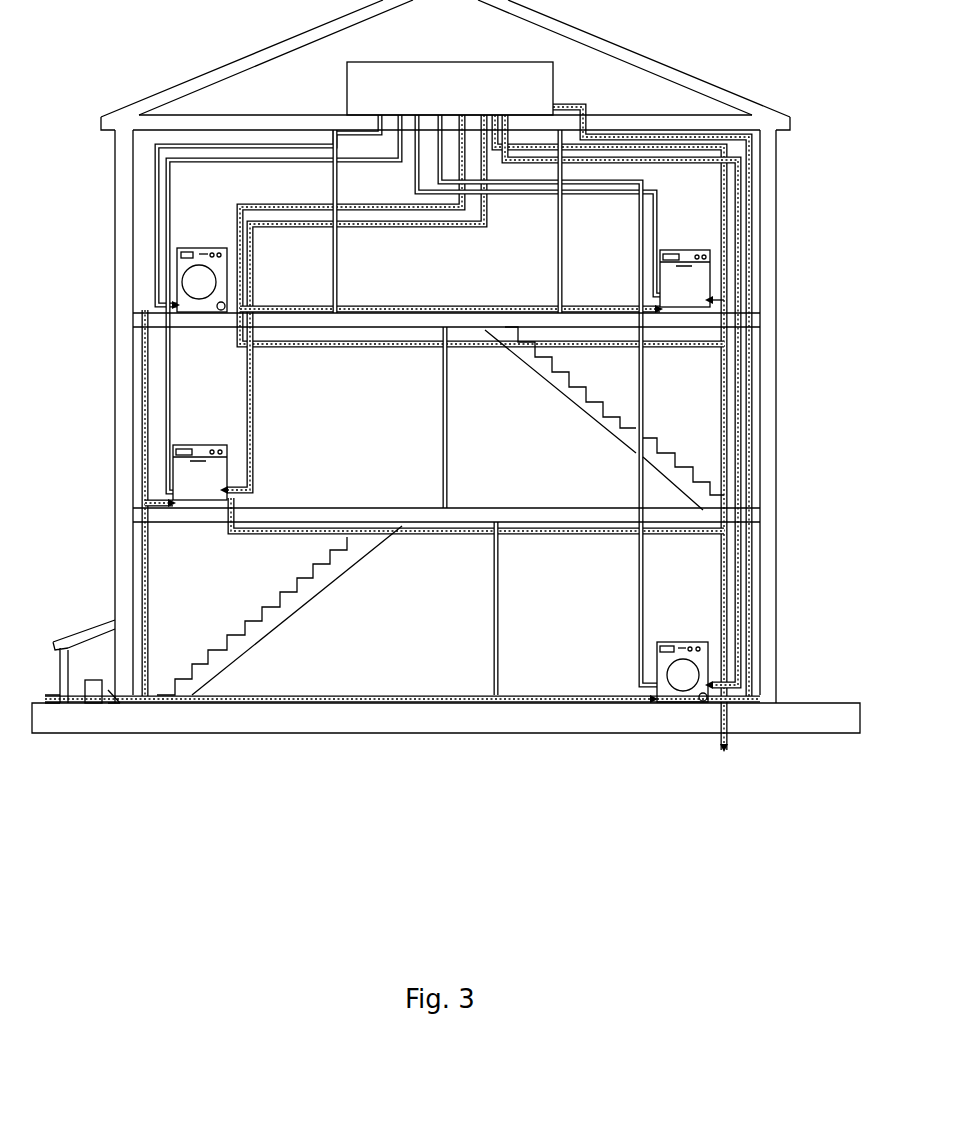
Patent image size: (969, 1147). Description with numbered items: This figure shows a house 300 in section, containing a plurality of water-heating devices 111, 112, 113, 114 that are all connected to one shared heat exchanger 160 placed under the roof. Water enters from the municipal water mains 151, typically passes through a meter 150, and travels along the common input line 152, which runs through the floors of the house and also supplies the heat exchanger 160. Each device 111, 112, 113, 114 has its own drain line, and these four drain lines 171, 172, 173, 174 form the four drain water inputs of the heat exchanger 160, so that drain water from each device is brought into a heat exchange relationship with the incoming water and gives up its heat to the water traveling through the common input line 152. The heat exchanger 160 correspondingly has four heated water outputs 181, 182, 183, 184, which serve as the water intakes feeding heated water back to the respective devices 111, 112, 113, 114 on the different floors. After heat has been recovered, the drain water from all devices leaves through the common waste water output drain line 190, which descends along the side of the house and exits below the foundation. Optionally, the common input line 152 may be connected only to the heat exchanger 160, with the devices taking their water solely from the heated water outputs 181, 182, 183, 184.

The heat exchanger 160 is at (450, 66).
The drain line 172 is at (268, 190).
The drain water input 173 is at (284, 303).
The device 113 is at (248, 274).
The heated water output 183 is at (482, 229).
The common input line 152 is at (402, 483).
The drain water input 174 is at (538, 205).
The device 114 is at (642, 278).
The house 300 is at (446, 366).
The heated water output 184 is at (672, 433).
The water intake 181 is at (677, 402).
The output drain line 190 is at (540, 445).
The water intake 182 is at (352, 304).
The device 112 is at (246, 454).
The drain line 171 is at (548, 400).
The device 111 is at (641, 662).
The meter 150 is at (153, 649).
The municipal water mains 151 is at (86, 739).